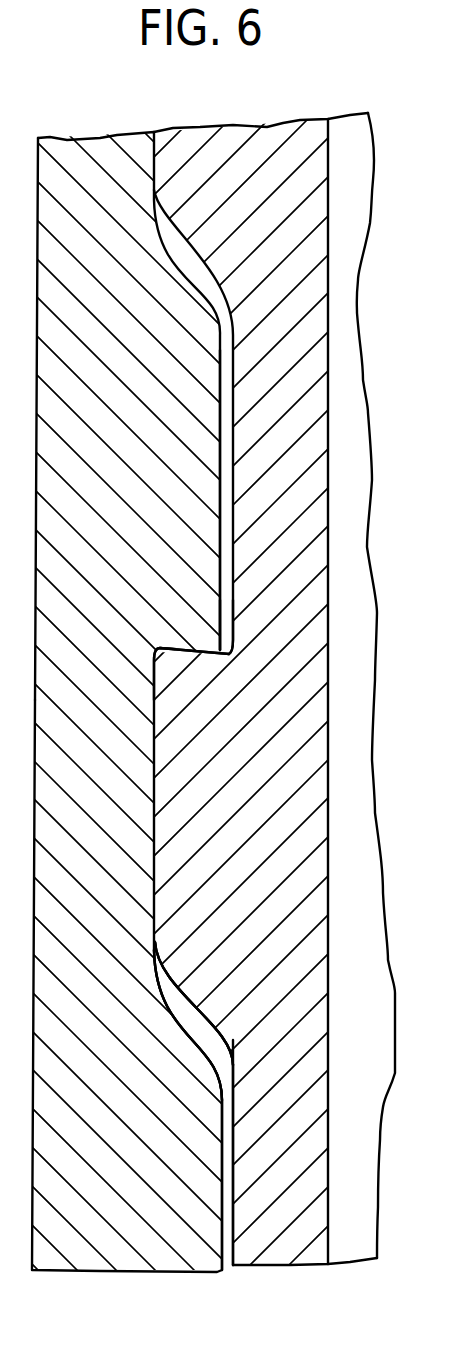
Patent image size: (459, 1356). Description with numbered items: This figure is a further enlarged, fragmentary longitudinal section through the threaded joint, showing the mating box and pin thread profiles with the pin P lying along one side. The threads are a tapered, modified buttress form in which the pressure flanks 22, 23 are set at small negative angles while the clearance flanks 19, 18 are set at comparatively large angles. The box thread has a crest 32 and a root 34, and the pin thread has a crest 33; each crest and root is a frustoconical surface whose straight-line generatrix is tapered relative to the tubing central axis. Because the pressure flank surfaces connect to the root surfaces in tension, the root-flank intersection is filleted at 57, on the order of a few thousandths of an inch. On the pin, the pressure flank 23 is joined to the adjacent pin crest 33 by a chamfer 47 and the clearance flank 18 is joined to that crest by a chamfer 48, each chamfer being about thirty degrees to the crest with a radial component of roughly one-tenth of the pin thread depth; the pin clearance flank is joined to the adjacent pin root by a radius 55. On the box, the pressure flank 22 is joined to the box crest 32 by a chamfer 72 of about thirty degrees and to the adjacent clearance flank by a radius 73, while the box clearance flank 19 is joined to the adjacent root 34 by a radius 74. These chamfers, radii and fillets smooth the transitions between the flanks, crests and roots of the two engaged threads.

The clearance flank 18 is at (200, 1007).
The clearance flank 19 is at (197, 1040).
The pressure flank 22 is at (213, 652).
The pressure flank 23 is at (204, 652).
The crest 32 is at (218, 460).
The crest 33 is at (235, 477).
The root 34 is at (153, 822).
The chamfer 47 is at (155, 660).
The chamfer 48 is at (162, 966).
The radius 55 is at (232, 1047).
The fillet 57 is at (231, 657).
The chamfer 72 is at (220, 648).
The radius 73 is at (213, 1068).
The radius 74 is at (163, 1008).
The pin P is at (365, 1145).